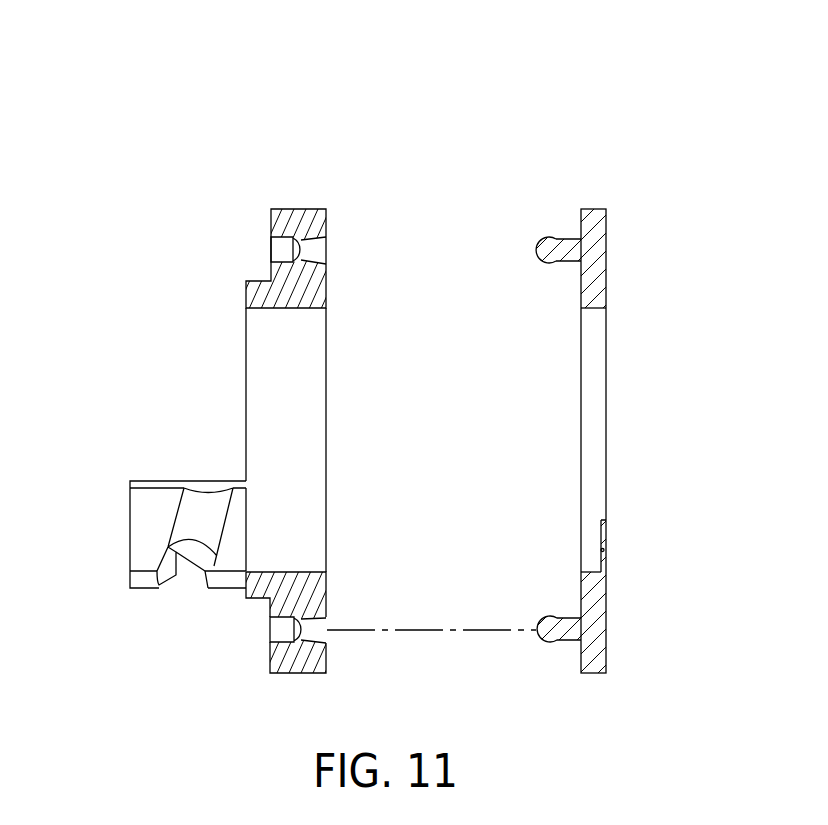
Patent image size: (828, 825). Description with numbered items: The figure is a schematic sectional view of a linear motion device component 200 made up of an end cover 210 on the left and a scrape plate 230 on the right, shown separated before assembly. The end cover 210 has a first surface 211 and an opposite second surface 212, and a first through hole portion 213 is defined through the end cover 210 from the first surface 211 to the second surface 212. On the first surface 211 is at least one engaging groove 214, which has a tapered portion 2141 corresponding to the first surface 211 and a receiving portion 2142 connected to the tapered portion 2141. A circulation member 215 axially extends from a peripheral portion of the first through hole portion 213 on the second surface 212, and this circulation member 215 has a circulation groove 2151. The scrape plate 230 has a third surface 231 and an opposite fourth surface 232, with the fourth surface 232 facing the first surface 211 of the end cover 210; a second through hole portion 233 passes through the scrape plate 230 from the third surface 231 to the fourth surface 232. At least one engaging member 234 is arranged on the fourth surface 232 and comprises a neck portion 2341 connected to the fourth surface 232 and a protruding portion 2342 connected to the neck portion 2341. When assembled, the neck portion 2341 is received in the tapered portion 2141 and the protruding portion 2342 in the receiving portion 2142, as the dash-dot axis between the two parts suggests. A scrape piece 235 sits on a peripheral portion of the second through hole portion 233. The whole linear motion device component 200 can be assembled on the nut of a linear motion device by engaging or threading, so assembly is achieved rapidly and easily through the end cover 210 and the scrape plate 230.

The linear motion device component 200 is at (103, 90).
The end cover 210 is at (283, 660).
The first surface 211 is at (336, 591).
The second surface 212 is at (260, 612).
The first through hole portion 213 is at (270, 354).
The engaging groove 214 is at (278, 223).
The tapered portion 2141 is at (314, 250).
The receiving portion 2142 is at (278, 251).
The circulation member 215 is at (207, 487).
The circulation groove 2151 is at (145, 525).
The scrape plate 230 is at (608, 655).
The third surface 231 is at (617, 608).
The fourth surface 232 is at (571, 657).
The second through hole portion 233 is at (608, 390).
The engaging member 234 is at (561, 238).
The neck portion 2341 is at (572, 250).
The protruding portion 2342 is at (550, 258).
The scrape piece 235 is at (607, 533).